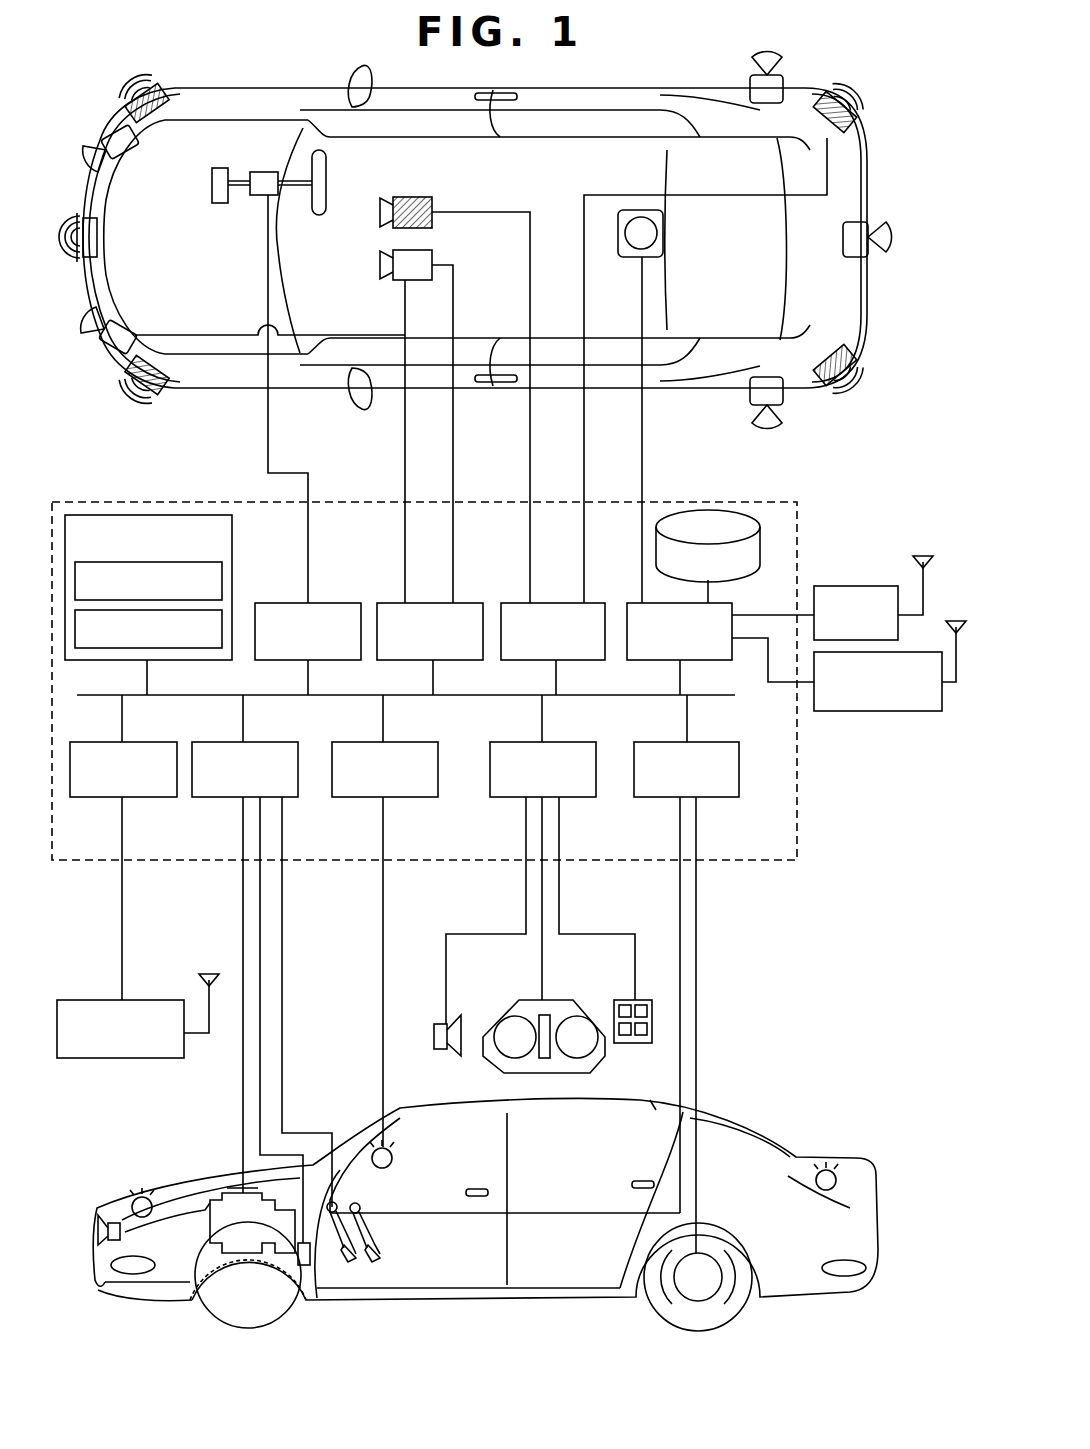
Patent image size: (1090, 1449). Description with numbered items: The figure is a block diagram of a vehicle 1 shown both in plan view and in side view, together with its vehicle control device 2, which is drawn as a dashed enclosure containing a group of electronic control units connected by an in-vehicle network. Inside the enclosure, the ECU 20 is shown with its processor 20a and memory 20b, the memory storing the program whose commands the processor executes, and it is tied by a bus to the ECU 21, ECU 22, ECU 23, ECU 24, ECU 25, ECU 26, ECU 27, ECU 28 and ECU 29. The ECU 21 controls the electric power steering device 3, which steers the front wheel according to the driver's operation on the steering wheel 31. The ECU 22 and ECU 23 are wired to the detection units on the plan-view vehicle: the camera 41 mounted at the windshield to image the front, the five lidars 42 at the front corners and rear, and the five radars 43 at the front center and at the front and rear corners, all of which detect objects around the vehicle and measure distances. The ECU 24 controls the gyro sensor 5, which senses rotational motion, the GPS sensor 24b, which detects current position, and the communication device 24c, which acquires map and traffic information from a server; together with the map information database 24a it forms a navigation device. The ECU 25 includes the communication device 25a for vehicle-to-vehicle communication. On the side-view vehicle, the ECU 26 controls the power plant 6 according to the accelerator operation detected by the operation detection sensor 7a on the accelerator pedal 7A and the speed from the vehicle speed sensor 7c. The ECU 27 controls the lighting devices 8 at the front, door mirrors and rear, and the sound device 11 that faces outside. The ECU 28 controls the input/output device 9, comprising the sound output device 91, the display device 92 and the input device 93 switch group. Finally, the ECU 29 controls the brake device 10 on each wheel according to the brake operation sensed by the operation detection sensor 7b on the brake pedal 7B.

The vehicle 1 is at (878, 152).
The vehicle control device 2 is at (797, 862).
The electric power steering device 3 is at (220, 203).
The gyro sensor 5 is at (663, 232).
The power plant 6 is at (214, 1197).
The operation detection sensor 7a is at (334, 1200).
The operation detection sensor 7b is at (362, 1208).
The accelerator pedal 7A is at (358, 1258).
The brake pedal 7B is at (382, 1250).
The vehicle speed sensor 7c is at (303, 1265).
The lighting devices 8 is at (132, 1203).
The input/output device 9 is at (462, 1072).
The brake device 10 is at (700, 1301).
The sound device 11 is at (98, 1226).
The ECU 20 is at (181, 558).
The processor 20a is at (222, 576).
The memory 20b is at (222, 630).
The ECU 21 is at (340, 603).
The ECU 22 is at (438, 603).
The ECU 23 is at (558, 603).
The ECU 24 is at (628, 603).
The map information database 24a is at (706, 510).
The GPS sensor 24b is at (868, 586).
The communication device 24c is at (868, 711).
The ECU 25 is at (150, 797).
The communication device 25a is at (125, 1058).
The ECU 26 is at (225, 797).
The ECU 27 is at (418, 797).
The ECU 28 is at (585, 797).
The ECU 29 is at (725, 797).
The steering wheel 31 is at (320, 215).
The camera 41 is at (432, 222).
The lidar 42 is at (127, 163).
The millimeter-wave radar 43 is at (153, 130).
The sound output device 91 is at (434, 1032).
The display device 92 is at (510, 1012).
The input device 93 is at (630, 1043).